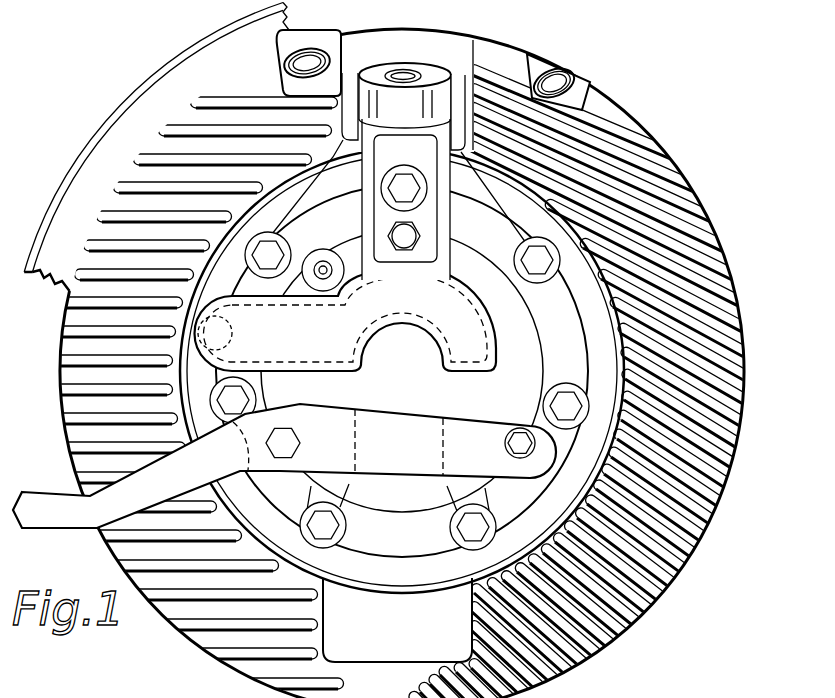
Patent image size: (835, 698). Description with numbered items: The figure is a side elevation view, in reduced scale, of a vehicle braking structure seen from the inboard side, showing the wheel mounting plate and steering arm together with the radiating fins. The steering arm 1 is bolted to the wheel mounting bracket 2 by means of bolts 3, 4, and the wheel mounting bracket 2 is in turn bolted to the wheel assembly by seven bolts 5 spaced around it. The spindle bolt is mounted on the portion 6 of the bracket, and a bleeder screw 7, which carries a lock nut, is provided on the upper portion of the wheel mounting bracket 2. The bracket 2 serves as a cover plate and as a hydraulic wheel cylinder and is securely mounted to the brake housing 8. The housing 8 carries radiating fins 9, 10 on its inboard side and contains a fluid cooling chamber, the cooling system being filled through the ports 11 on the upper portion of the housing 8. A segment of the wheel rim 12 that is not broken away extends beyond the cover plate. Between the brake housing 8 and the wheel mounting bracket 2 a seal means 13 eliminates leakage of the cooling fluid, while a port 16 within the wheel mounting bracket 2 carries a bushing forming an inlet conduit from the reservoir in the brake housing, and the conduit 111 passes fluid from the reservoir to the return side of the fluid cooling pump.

The steering arm 1 is at (50, 523).
The wheel mounting bracket 2 is at (410, 549).
The bolt 3 is at (397, 697).
The bolt 4 is at (505, 443).
The bolts 5 is at (404, 176).
The portion of the bracket 6 is at (424, 80).
The bleeder screw 7 is at (418, 236).
The brake housing 8 is at (617, 108).
The radiating fins 9 is at (705, 250).
The radiating fins 10 is at (172, 124).
The ports 11 is at (288, 60).
The wheel rim 12 is at (183, 54).
The seal means 13 is at (361, 638).
The port 16 is at (216, 318).
The conduit 111 is at (356, 338).